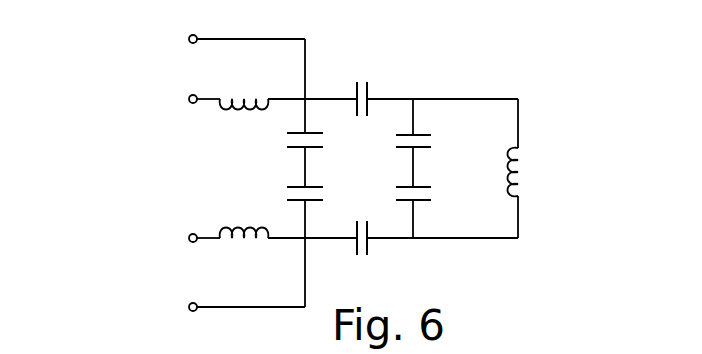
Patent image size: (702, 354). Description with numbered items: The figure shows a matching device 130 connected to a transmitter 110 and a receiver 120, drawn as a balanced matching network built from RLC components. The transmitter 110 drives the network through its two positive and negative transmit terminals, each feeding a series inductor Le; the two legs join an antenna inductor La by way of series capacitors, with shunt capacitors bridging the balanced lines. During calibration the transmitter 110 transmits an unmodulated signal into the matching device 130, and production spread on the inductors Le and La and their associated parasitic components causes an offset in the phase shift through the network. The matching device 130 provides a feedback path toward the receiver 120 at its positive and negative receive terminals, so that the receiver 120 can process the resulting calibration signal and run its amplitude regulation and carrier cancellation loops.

The transmitter 110 is at (138, 96).
The receiver 120 is at (130, 39).
The matching device 130 is at (498, 72).